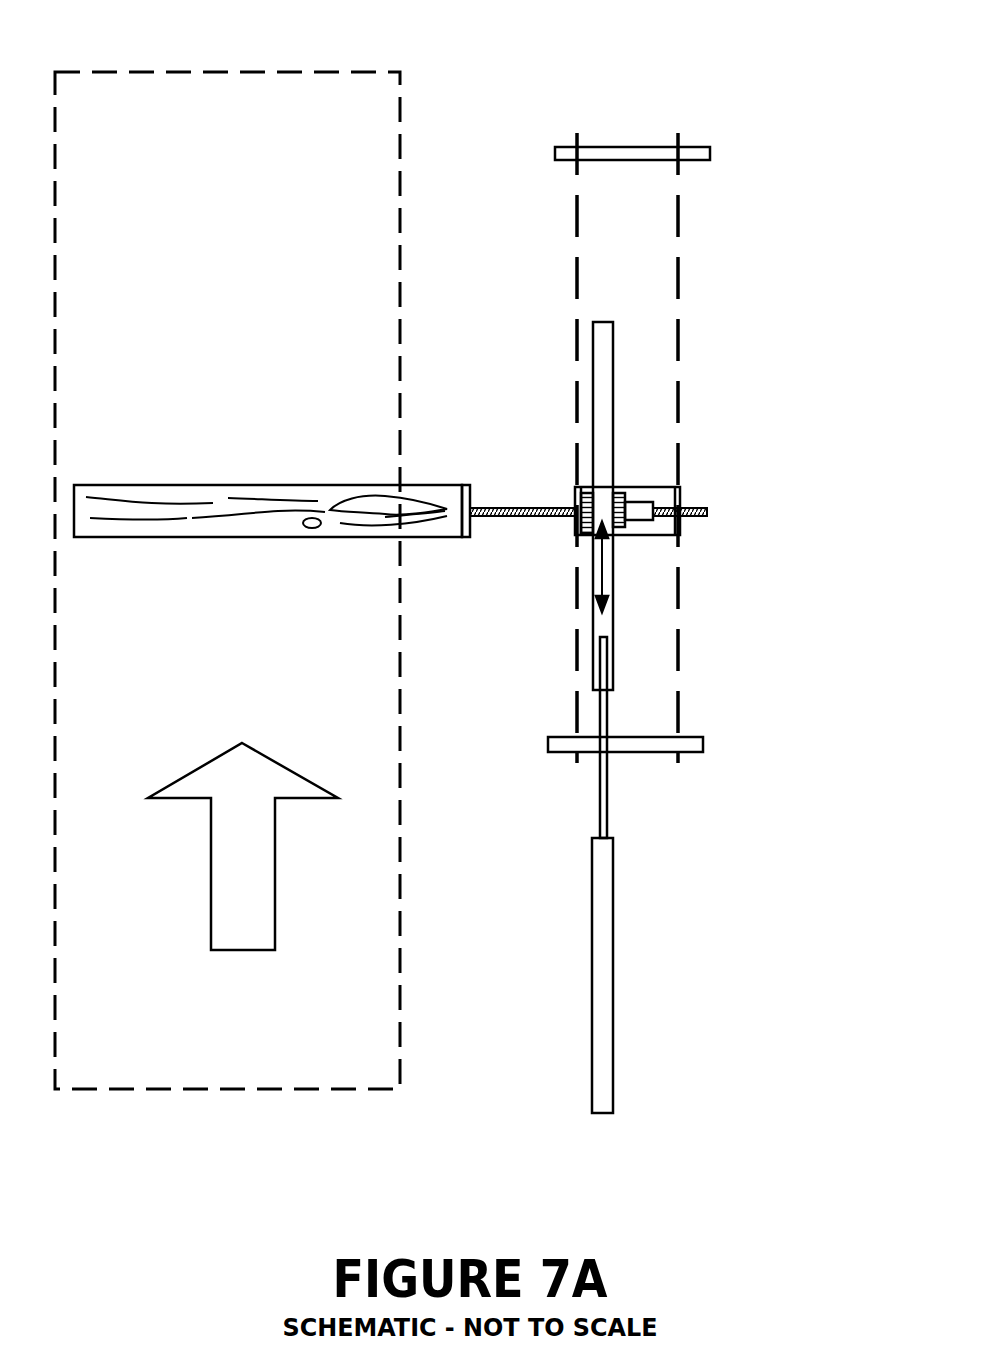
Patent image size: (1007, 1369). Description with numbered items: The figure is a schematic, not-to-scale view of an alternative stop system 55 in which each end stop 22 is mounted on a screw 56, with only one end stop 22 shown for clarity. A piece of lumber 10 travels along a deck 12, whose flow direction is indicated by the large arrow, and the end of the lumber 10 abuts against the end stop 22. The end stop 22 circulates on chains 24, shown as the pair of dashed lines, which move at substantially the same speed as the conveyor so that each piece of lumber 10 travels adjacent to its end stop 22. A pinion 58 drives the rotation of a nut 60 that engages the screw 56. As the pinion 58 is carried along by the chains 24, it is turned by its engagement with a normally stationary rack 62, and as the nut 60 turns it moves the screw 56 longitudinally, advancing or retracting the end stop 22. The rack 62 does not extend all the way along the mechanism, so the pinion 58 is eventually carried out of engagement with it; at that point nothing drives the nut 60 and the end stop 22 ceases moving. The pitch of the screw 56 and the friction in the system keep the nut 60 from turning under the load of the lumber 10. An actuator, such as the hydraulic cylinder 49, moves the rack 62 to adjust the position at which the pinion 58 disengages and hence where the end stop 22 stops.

The lumber 10 is at (420, 484).
The deck 12 is at (275, 1045).
The end stop 22 is at (470, 488).
The chains 24 is at (577, 284).
The hydraulic cylinder 49 is at (612, 840).
The system 55 is at (634, 72).
The screw 56 is at (693, 517).
The pinion 58 is at (620, 487).
The nut 60 is at (636, 515).
The rack 62 is at (613, 386).